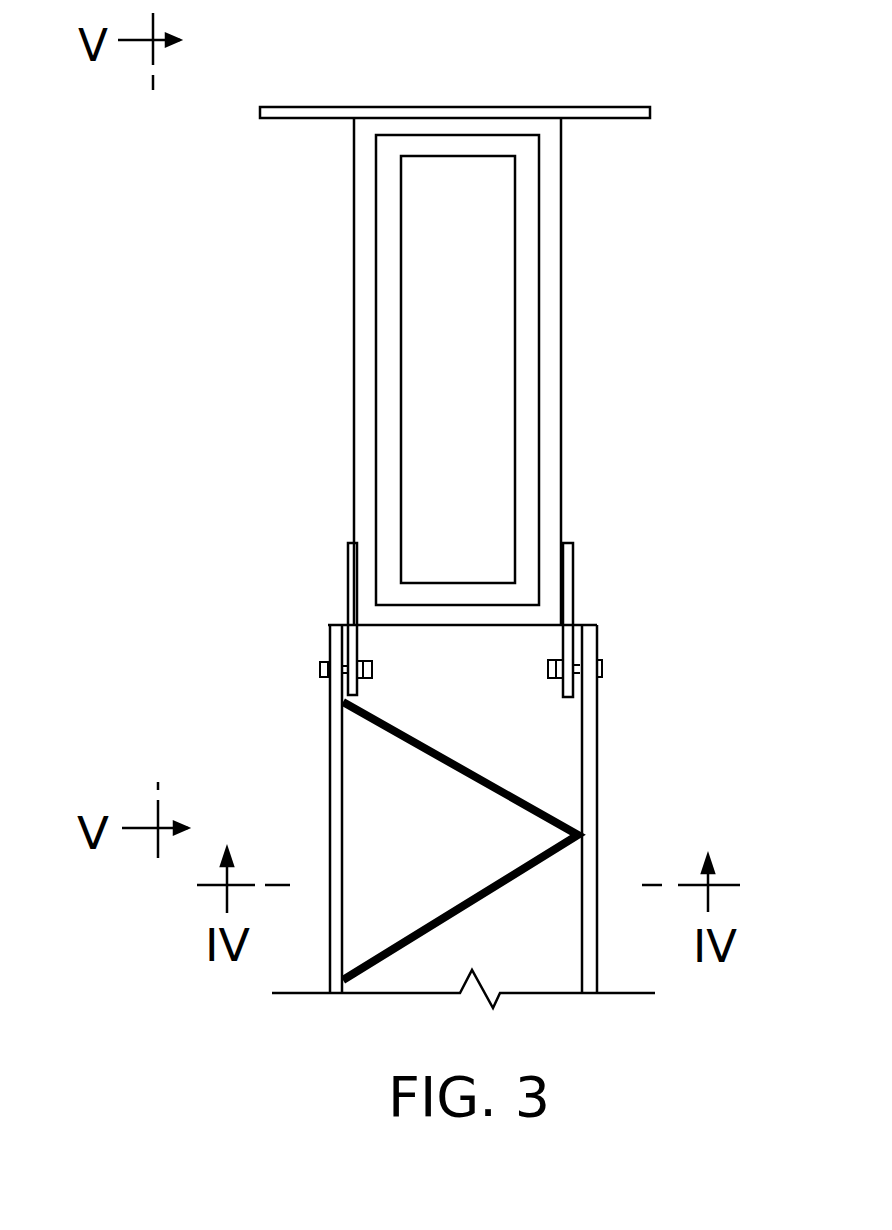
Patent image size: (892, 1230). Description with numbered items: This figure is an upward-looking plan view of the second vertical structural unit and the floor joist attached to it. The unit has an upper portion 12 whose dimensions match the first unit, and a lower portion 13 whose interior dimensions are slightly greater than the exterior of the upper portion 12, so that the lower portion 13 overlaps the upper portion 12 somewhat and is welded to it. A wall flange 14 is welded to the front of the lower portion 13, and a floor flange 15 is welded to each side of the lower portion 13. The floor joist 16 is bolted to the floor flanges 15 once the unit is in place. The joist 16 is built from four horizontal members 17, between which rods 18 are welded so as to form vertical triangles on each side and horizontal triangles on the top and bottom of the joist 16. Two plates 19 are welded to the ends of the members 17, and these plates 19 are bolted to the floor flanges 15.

The upper portion 12 is at (390, 308).
The lower portion 13 is at (558, 335).
The wall flange 14 is at (497, 107).
The floor flange 15 is at (347, 585).
The floor joist 16 is at (612, 735).
The horizontal members 17 is at (330, 805).
The rods 18 is at (463, 772).
The plates 19 is at (573, 658).